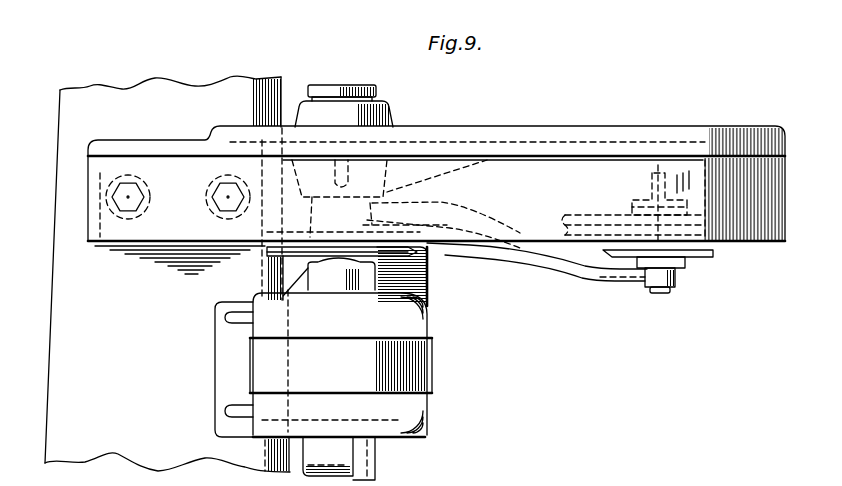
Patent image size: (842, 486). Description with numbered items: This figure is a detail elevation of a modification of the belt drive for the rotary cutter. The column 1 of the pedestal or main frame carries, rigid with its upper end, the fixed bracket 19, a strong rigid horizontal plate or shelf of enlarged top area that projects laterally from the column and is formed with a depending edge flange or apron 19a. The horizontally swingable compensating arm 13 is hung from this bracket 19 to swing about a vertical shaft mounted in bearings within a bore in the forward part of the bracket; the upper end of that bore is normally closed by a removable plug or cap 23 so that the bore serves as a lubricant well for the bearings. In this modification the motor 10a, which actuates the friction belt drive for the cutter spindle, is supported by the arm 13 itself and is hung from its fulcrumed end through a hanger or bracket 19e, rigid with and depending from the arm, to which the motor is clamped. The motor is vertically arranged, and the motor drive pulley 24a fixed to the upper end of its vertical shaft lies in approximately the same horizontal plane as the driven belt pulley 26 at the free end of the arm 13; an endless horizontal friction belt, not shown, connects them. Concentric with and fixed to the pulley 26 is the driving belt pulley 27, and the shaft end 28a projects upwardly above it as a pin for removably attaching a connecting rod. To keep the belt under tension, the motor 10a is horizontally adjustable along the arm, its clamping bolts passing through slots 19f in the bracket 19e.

The column 1 is at (240, 98).
The fixed bracket 19 is at (583, 128).
The depending edge flange 19a is at (782, 247).
The hanger bracket 19e is at (427, 282).
The slots 19f is at (232, 413).
The removable cap 23 is at (365, 87).
The motor drive pulley 24a is at (265, 261).
The motor 10a is at (403, 360).
The compensating arm 13 is at (557, 271).
The driven belt pulley 26 is at (713, 258).
The driving belt pulley 27 is at (565, 215).
The shaft end 28a is at (652, 190).